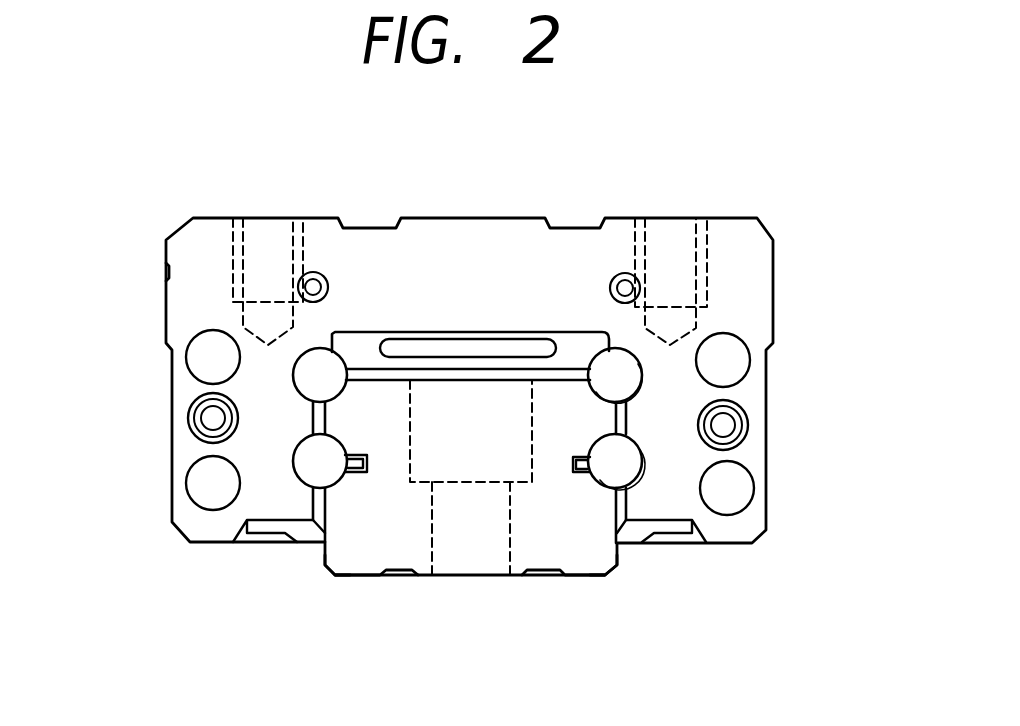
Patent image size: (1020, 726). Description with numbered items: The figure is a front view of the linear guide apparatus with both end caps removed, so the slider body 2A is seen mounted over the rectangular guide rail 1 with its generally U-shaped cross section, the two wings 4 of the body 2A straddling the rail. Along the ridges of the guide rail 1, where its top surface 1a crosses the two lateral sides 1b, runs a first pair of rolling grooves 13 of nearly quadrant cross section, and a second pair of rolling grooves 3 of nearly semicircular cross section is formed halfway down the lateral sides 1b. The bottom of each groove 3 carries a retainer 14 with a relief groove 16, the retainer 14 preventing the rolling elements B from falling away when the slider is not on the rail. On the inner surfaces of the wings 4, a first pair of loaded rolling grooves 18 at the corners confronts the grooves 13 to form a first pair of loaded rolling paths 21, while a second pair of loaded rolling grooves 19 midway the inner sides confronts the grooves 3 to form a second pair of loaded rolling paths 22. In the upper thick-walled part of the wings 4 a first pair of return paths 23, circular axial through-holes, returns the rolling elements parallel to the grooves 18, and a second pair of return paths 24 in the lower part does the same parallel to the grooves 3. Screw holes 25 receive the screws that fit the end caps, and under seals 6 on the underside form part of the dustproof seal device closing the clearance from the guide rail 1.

The body 2A is at (683, 218).
The guide rail 1 is at (600, 565).
The top surface 1a is at (447, 380).
The lateral sides 1b is at (327, 568).
The second pair of rolling grooves 3 is at (333, 443).
The wings 4 is at (753, 433).
The under seals 6 is at (297, 536).
The first pair of rolling grooves 13 is at (648, 398).
The retainer 14 is at (575, 480).
The relief groove 16 is at (353, 471).
The first pair of loaded rolling grooves 18 is at (634, 369).
The second pair of loaded rolling grooves 19 is at (300, 476).
The first pair of loaded rolling paths 21 is at (650, 390).
The second pair of loaded rolling paths 22 is at (310, 474).
The first pair of return paths 23 is at (212, 336).
The second pair of return paths 24 is at (726, 506).
The screw holes 25 is at (214, 404).
The rolling elements B is at (640, 487).